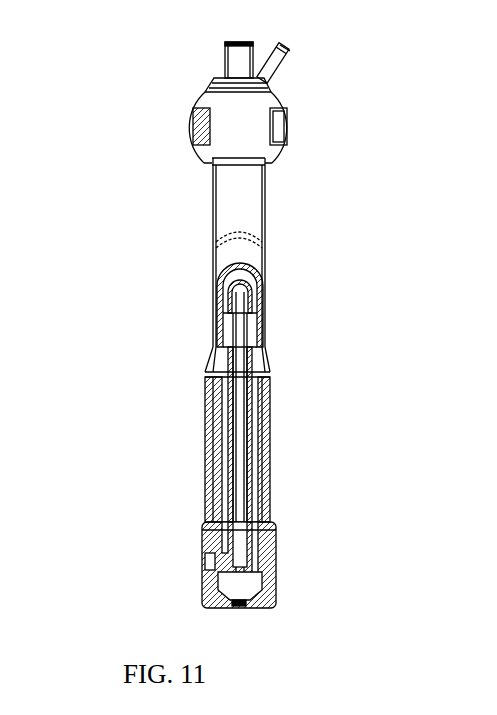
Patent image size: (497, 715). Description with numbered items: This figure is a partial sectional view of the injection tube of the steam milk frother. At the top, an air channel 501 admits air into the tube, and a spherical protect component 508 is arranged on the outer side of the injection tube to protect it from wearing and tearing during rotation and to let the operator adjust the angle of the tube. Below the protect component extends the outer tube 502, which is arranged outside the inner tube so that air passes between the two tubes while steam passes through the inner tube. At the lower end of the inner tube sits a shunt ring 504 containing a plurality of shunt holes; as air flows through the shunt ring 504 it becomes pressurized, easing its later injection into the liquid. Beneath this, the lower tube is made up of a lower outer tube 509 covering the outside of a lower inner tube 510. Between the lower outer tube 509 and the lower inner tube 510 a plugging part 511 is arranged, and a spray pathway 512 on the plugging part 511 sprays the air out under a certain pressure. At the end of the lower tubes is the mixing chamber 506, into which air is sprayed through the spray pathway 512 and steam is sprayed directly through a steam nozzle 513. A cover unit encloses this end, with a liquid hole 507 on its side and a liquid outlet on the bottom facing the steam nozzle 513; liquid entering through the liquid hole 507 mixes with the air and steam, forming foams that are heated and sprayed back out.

The air channel 501 is at (277, 57).
The spherical protect component 508 is at (253, 108).
The outer tube 502 is at (217, 212).
The shunt ring 504 is at (213, 365).
The lower inner tube 510 is at (242, 452).
The lower outer tube 509 is at (265, 492).
The spray pathway 512 is at (265, 520).
The mixing chamber 506 is at (275, 565).
The plugging part 511 is at (212, 523).
The liquid hole 507 is at (210, 562).
The steam nozzle 513 is at (257, 578).